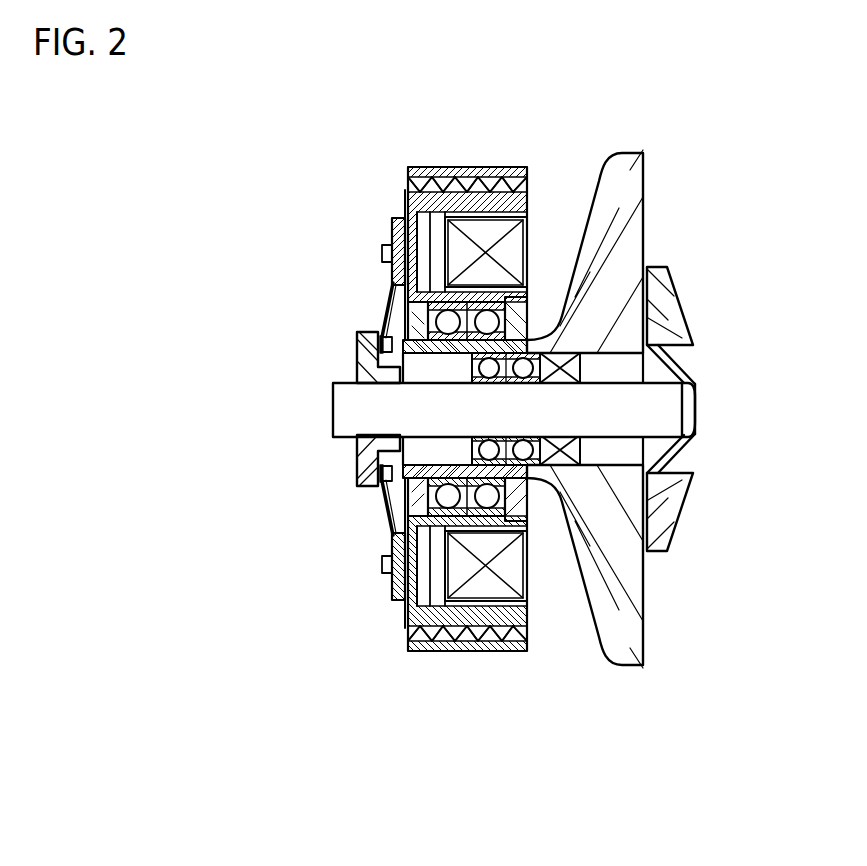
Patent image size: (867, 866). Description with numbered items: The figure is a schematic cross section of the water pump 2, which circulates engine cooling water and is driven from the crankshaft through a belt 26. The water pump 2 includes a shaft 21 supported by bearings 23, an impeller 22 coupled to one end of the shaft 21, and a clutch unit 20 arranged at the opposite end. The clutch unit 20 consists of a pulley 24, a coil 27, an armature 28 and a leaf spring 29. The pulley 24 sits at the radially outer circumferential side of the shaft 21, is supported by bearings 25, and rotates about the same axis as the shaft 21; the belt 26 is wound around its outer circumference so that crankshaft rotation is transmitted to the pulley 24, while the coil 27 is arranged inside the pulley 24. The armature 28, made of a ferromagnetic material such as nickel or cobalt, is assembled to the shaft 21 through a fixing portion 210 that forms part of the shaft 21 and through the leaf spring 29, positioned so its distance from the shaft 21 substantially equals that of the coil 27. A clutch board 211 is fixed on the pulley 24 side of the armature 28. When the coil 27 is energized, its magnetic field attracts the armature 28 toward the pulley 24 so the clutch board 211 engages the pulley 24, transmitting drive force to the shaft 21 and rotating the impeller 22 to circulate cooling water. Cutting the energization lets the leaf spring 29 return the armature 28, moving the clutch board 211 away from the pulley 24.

The water pump 2 is at (743, 716).
The clutch unit 20 is at (385, 153).
The shaft 21 is at (336, 428).
The impeller 22 is at (680, 335).
The bearings 23 is at (440, 358).
The pulley 24 is at (527, 185).
The bearings 25 is at (497, 318).
The belt 26 is at (465, 167).
The coil 27 is at (517, 243).
The armature 28 is at (387, 267).
The leaf spring 29 is at (385, 285).
The fixing portion 210 is at (357, 340).
The clutch board 211 is at (392, 220).